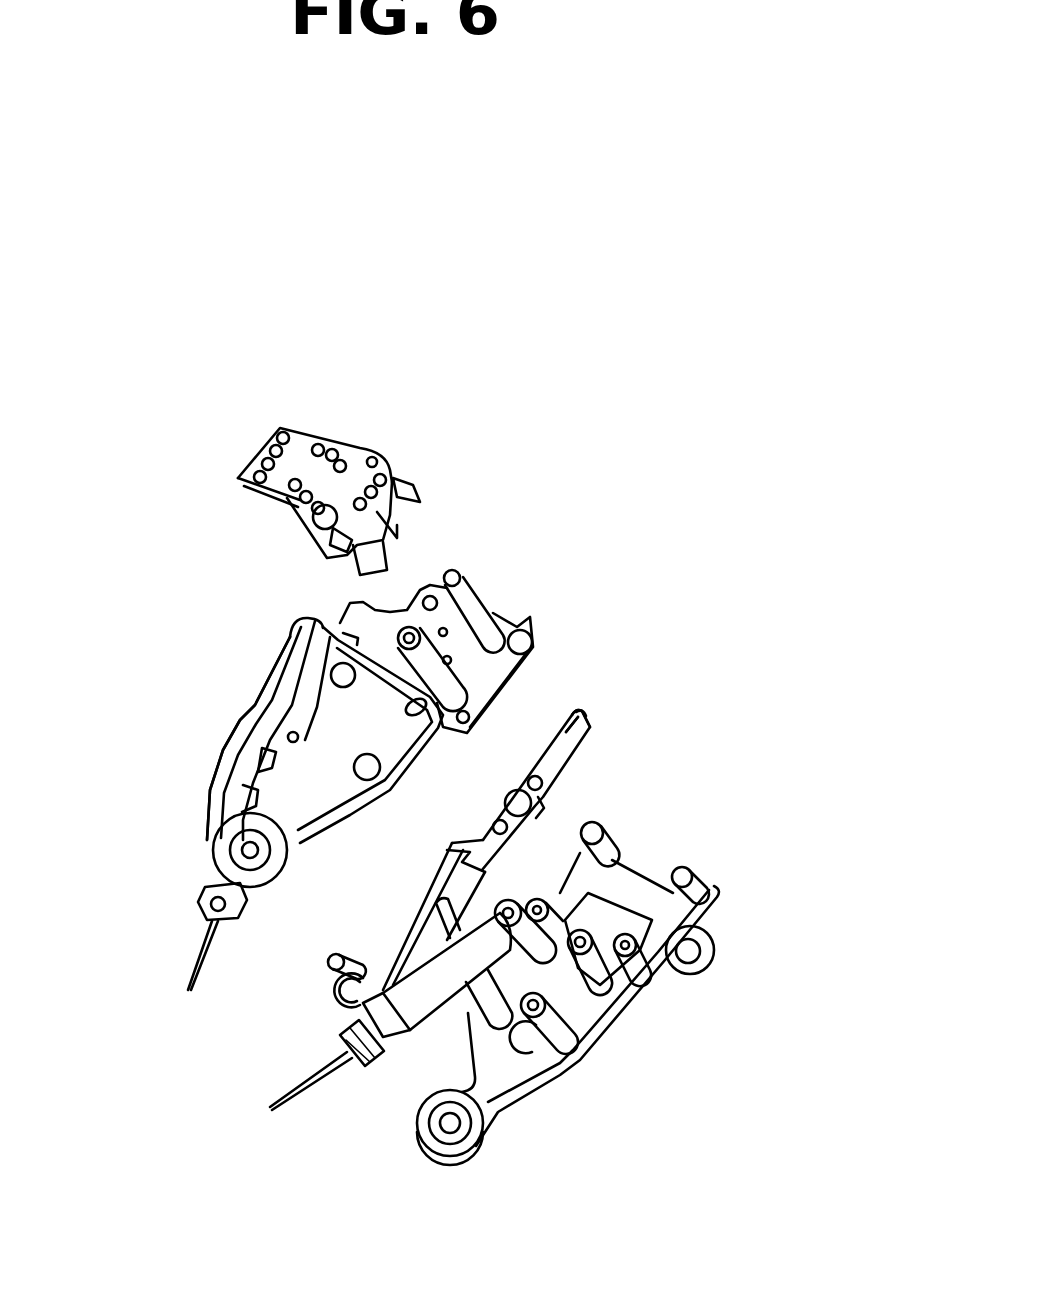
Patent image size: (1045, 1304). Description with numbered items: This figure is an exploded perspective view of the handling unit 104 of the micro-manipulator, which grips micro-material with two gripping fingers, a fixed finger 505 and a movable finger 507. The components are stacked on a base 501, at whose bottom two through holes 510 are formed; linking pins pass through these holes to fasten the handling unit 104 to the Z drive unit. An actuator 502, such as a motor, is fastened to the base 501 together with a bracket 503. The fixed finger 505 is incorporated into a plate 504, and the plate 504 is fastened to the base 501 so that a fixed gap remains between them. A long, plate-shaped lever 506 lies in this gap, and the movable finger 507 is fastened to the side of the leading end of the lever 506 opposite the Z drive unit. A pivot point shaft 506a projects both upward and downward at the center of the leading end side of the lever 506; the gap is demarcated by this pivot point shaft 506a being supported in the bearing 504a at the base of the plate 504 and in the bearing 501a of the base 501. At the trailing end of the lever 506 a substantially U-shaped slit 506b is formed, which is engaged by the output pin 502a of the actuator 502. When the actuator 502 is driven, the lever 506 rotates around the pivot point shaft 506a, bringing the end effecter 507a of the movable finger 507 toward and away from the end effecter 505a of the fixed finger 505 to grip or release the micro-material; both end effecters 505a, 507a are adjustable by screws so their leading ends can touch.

The handling unit 104 is at (437, 329).
The base 501 is at (620, 1017).
The bearing 501a is at (462, 1138).
The actuator 502 is at (338, 440).
The output pin 502a is at (420, 490).
The bracket 503 is at (497, 604).
The plate 504 is at (319, 733).
The bearing 504a is at (218, 812).
The fixed finger 505 is at (198, 893).
The end effecter 505a is at (188, 988).
The lever 506 is at (396, 908).
The pivot point shaft 506a is at (327, 973).
The slit 506b is at (590, 707).
The movable finger 507 is at (378, 1068).
The end effecter 507a is at (270, 1108).
The through holes 510 is at (710, 925).